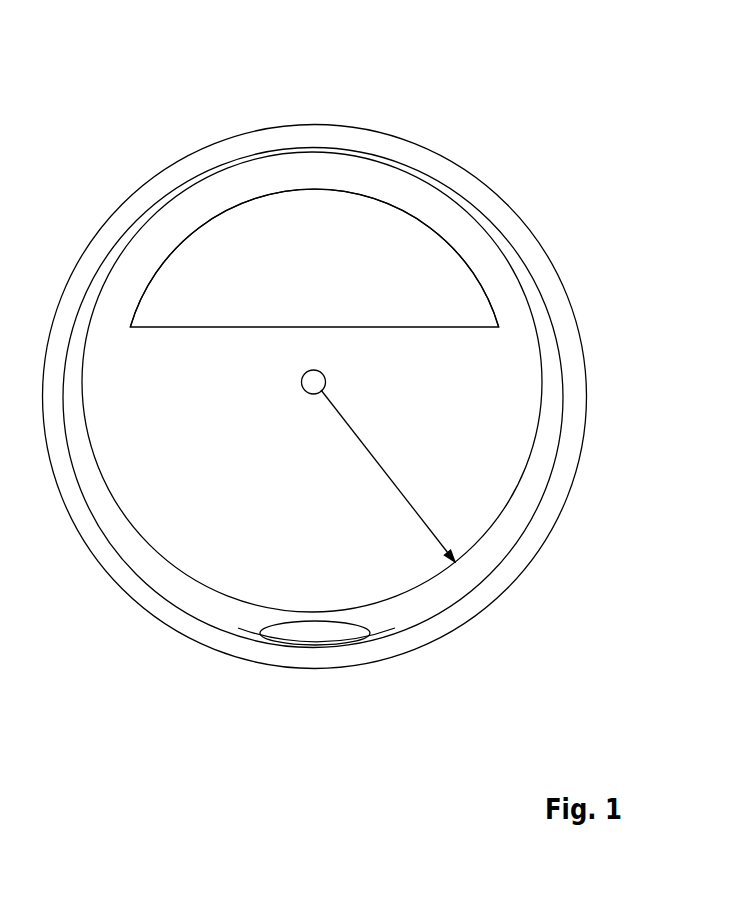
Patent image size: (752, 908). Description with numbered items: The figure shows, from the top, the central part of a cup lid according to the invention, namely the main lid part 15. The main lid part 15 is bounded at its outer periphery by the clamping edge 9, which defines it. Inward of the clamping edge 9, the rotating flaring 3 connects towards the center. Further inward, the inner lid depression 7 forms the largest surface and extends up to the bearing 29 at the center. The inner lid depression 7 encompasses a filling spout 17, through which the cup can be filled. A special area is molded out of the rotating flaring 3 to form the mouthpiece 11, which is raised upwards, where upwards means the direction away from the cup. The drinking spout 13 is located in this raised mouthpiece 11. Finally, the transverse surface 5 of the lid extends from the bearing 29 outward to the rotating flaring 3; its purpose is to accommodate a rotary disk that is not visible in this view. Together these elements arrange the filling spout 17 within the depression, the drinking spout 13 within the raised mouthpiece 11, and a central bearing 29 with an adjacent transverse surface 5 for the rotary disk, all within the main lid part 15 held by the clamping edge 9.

The rotating flaring 3 is at (155, 578).
The transverse surface 5 is at (432, 528).
The inner lid depression 7 is at (128, 370).
The clamping edge 9 is at (472, 622).
The mouthpiece 11 is at (238, 628).
The drinking spout 13 is at (303, 635).
The main lid part 15 is at (473, 438).
The filling spout 17 is at (331, 235).
The bearing 29 is at (323, 377).